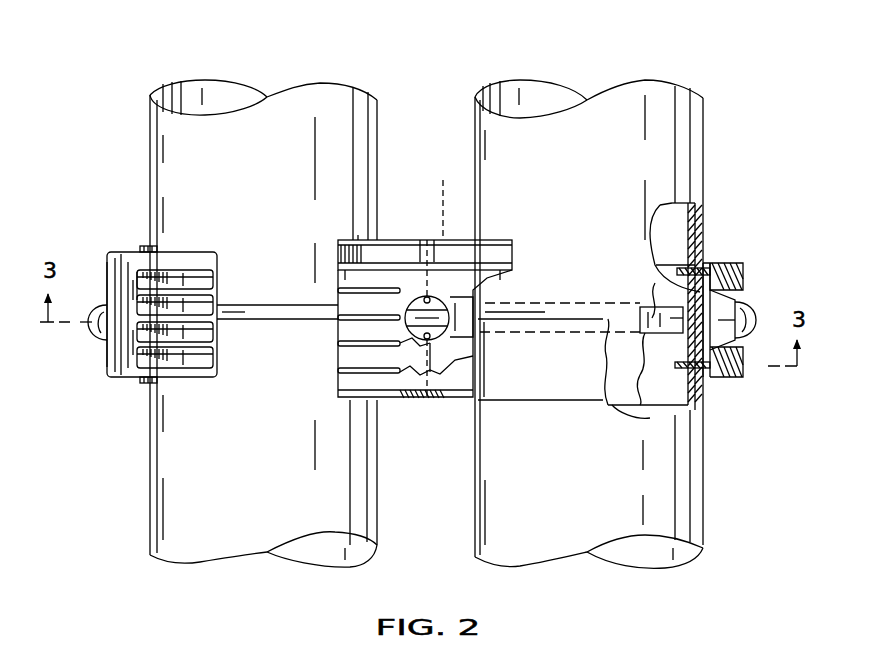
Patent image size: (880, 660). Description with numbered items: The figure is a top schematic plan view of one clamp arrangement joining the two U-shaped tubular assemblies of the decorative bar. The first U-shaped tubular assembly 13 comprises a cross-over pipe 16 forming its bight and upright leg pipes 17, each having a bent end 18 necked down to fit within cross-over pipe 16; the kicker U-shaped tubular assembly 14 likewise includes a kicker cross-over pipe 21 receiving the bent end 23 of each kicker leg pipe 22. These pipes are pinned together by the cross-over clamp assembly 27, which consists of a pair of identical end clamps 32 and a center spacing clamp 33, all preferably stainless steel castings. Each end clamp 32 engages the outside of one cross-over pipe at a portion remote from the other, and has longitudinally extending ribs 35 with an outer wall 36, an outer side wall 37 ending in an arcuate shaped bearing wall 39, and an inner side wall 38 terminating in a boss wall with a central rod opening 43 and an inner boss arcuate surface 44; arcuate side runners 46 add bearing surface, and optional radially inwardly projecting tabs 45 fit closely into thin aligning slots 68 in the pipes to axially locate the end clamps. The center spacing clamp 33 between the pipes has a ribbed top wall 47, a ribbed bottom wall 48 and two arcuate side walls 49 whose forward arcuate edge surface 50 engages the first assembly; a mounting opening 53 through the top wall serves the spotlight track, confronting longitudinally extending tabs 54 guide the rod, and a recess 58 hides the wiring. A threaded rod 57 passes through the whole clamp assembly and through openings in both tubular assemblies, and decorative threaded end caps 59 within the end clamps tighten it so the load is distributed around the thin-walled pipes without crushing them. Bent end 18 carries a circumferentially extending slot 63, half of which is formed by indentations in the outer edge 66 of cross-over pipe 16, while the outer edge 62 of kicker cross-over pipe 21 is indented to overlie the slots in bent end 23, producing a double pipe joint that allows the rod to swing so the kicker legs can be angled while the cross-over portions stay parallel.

The first U-shaped tubular assembly 13 is at (698, 82).
The kicker U-shaped tubular assembly 14 is at (177, 82).
The cross-over pipe 16 is at (703, 518).
The upright leg pipe 17 is at (566, 82).
The bent end 18 is at (704, 178).
The kicker cross-over pipe 21 is at (150, 462).
The kicker leg pipe 22 is at (228, 80).
The bent end of kicker leg pipe 23 is at (152, 162).
The cross-over clamp assembly 27 is at (395, 202).
The end clamp 32 is at (108, 386).
The center spacing clamp 33 is at (400, 406).
The longitudinally extending rib 35 is at (110, 354).
The outer wall 36 is at (122, 288).
The outer side wall 37 is at (140, 272).
The inner side wall 38 is at (744, 347).
The arcuate shaped bearing wall 39 is at (197, 360).
The central rod opening 43 is at (744, 300).
The inner boss arcuate surface 44 is at (690, 292).
The radially inwardly projecting tab 45 is at (672, 235).
The side runner 46 is at (140, 250).
The ribbed top wall 47 is at (372, 268).
The ribbed bottom wall 48 is at (462, 370).
The arcuate side wall 49 is at (462, 240).
The forward arcuate edge surface 50 is at (476, 380).
The mounting opening 53 is at (416, 296).
The longitudinally extending tab 54 is at (432, 456).
The threaded rod 57 is at (655, 306).
The recess 58 is at (456, 400).
The decorative threaded end cap 59 is at (95, 333).
The outer edge of kicker cross-over pipe 62 is at (272, 312).
The circumferentially extending slot 63 is at (642, 340).
The outer edge of cross-over pipe 66 is at (528, 318).
The aligning slot 68 is at (718, 262).